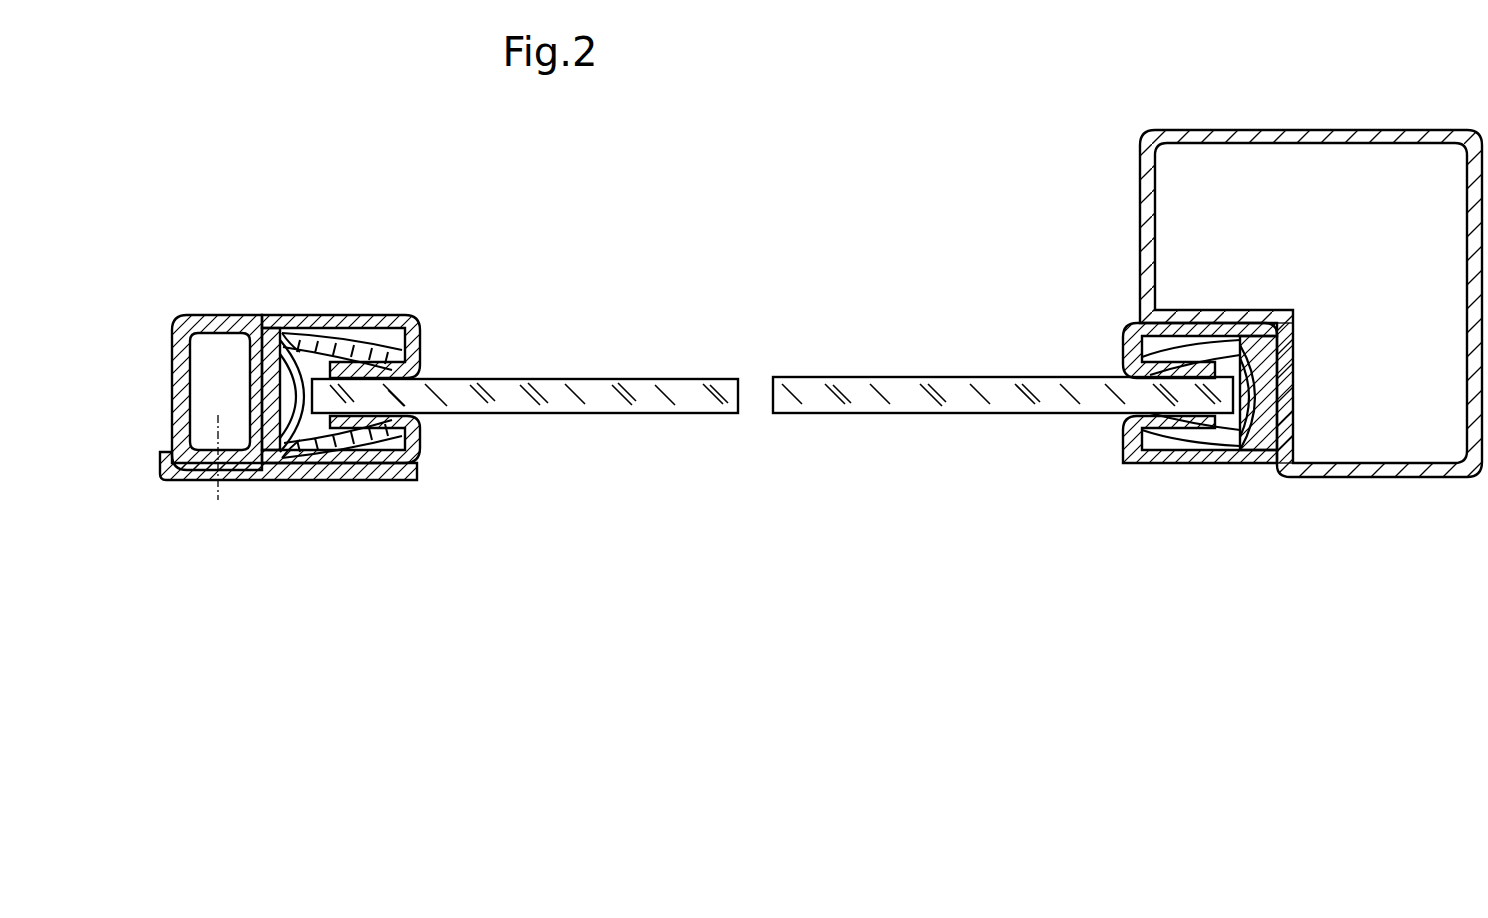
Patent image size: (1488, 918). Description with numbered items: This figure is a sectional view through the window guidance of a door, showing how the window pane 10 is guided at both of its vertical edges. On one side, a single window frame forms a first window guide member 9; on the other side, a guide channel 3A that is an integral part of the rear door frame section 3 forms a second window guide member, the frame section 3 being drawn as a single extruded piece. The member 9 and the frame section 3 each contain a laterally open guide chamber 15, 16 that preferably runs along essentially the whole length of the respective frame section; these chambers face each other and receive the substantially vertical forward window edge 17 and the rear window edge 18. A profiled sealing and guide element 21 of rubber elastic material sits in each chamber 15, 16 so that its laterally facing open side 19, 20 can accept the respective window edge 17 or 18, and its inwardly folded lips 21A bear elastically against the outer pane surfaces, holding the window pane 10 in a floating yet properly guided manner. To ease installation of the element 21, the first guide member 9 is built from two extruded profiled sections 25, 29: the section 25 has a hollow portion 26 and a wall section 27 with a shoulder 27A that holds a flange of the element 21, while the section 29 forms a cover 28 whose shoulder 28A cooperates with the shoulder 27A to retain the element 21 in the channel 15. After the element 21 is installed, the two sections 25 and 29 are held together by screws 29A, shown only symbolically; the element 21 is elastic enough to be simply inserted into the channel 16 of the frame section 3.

The rear door frame section 3 is at (1261, 303).
The guide channel 3A is at (1295, 346).
The first window guide member 9 is at (330, 389).
The window pane 10 is at (570, 392).
The guide chamber 15 is at (363, 352).
The guide chamber 16 is at (1128, 318).
The forward window edge 17 is at (316, 430).
The rear window edge 18 is at (1229, 402).
The open side 19 is at (392, 379).
The open side 20 is at (1135, 370).
The sealing and guide element 21 is at (392, 313).
The lips 21A is at (421, 357).
The profiled section 25 is at (198, 313).
The hollow portion 26 is at (262, 350).
The wall section 27 is at (315, 313).
The shoulder 27A is at (292, 346).
The cover 28 is at (382, 483).
The shoulder 28A is at (305, 456).
The profiled section 29 is at (254, 483).
The screws 29A is at (216, 497).